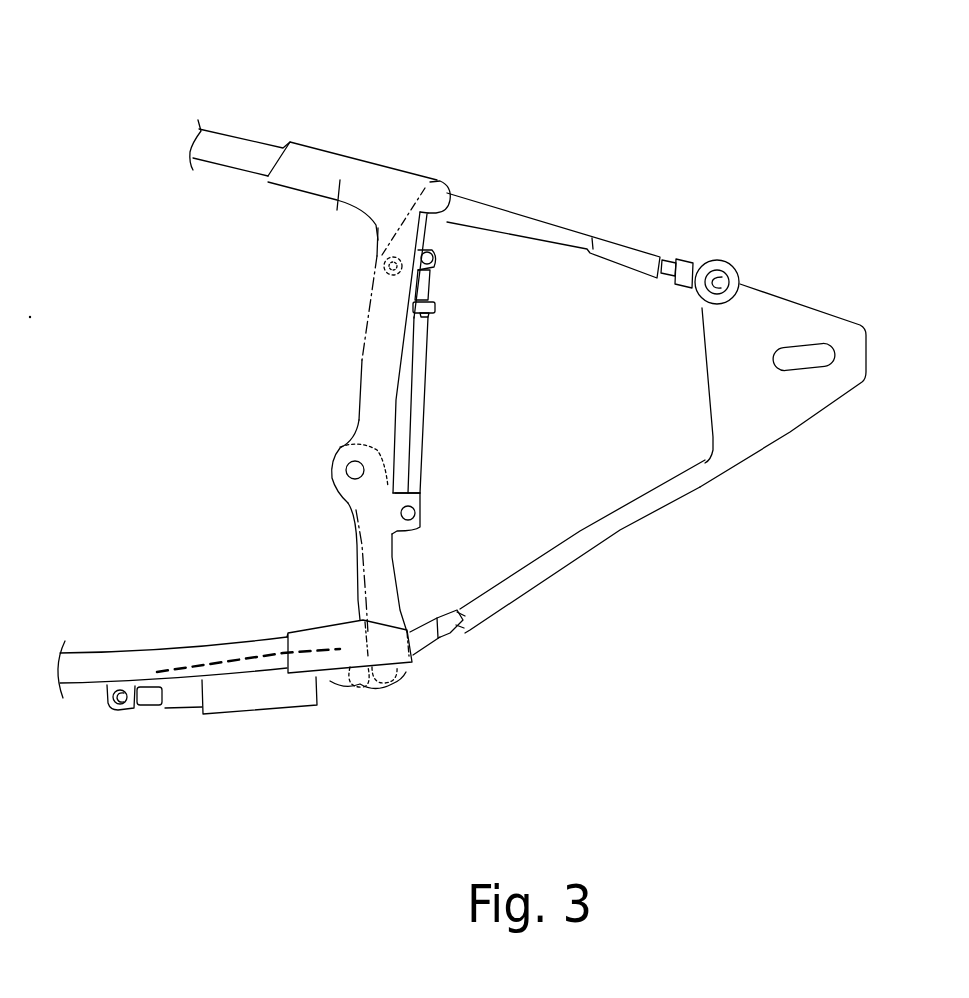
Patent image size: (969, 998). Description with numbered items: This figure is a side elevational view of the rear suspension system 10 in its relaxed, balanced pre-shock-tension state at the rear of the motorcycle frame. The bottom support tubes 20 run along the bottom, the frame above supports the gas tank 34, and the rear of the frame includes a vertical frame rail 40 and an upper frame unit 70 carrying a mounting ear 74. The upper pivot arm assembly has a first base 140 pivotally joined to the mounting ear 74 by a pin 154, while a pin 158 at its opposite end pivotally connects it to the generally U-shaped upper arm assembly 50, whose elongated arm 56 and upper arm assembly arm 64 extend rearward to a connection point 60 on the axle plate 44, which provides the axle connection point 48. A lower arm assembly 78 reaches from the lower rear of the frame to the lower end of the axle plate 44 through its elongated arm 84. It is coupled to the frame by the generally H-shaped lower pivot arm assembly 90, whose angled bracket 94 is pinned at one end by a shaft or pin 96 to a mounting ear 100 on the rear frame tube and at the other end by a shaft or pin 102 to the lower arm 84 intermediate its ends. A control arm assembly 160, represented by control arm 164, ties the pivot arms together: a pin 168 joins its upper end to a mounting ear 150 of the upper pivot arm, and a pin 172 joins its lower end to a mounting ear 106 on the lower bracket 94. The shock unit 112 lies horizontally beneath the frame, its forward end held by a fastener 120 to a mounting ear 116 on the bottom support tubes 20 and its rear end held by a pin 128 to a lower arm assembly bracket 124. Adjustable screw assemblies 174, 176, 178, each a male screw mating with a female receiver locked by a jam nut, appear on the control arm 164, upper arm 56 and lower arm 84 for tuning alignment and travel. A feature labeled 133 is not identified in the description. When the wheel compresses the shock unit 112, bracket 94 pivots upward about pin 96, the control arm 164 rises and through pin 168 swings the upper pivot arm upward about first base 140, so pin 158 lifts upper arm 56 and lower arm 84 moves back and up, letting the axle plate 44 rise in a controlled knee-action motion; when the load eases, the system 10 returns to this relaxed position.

The rear suspension system 10 is at (667, 630).
The bottom support tubes 20 is at (82, 667).
The gas tank 34 is at (222, 150).
The vertical frame rail 40 is at (380, 337).
The axle plate 44 is at (796, 366).
The axle connection point 48 is at (805, 350).
The upper arm assembly 50 is at (508, 176).
The second elongated arm 56 is at (592, 247).
The connection point 60 is at (727, 258).
The upper arm assembly arm 64 is at (441, 180).
The upper frame unit 70 is at (337, 210).
The mounting ear 74 is at (378, 227).
The lower arm assembly 78 is at (603, 546).
The elongated arm 84 is at (560, 556).
The lower pivot arm assembly 90 is at (313, 550).
The bracket 94 is at (387, 563).
The shaft or pin 96 is at (346, 466).
The mounting ear 100 is at (340, 437).
The shaft or pin 102 is at (393, 678).
The mounting ear 106 is at (417, 493).
The shock unit 112 is at (265, 698).
The mounting ear 116 is at (127, 713).
The fastener 120 is at (184, 734).
The lower arm assembly bracket 124 is at (363, 688).
The pin 128 is at (435, 734).
The pivot axis 133 is at (380, 247).
The first base 140 is at (317, 292).
The mounting ear 150 is at (437, 247).
The pin 154 is at (382, 262).
The pin 158 is at (460, 132).
The control arm assembly 160 is at (446, 440).
The control arm 164 is at (420, 410).
The pin 168 is at (437, 270).
The pin 172 is at (420, 510).
The adjustable screw assembly 174 is at (432, 308).
The adjustable screw assembly 176 is at (675, 257).
The adjustable screw assembly 178 is at (458, 640).